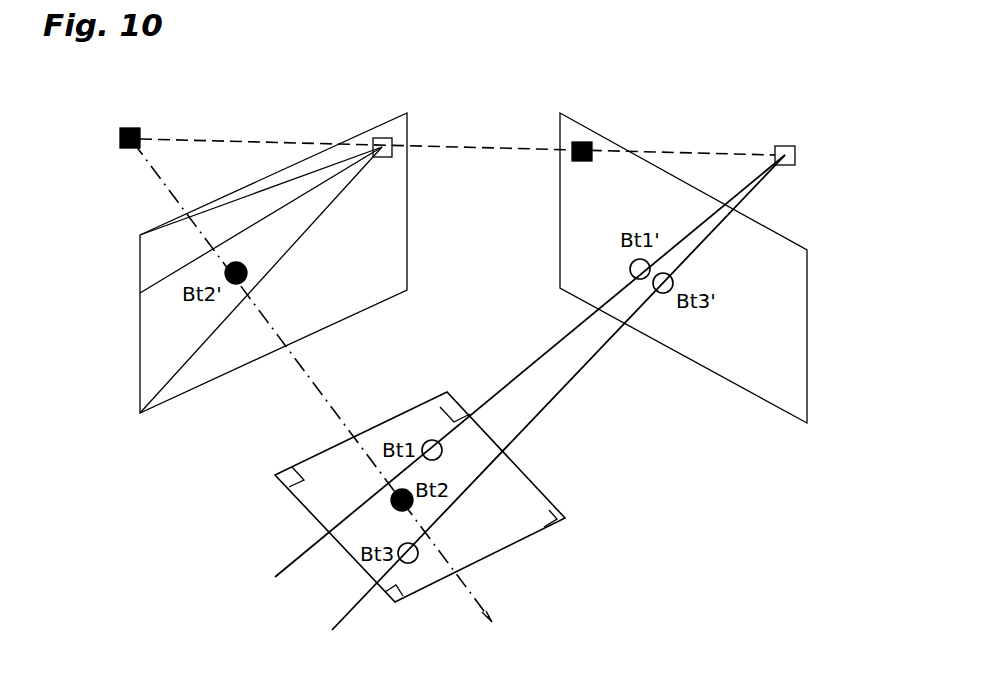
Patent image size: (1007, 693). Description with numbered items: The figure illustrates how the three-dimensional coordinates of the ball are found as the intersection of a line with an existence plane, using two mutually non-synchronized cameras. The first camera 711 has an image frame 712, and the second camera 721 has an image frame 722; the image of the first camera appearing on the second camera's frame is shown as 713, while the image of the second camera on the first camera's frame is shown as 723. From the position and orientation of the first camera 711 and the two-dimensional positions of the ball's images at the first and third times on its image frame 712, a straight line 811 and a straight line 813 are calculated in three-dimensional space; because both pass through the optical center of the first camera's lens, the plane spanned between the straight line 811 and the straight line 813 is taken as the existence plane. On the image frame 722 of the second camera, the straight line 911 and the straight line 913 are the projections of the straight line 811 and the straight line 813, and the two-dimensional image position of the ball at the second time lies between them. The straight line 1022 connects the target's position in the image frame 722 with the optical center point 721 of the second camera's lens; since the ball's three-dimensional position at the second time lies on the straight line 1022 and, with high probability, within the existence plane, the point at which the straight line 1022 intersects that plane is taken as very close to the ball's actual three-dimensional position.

The second camera 721 is at (132, 128).
The image of the first camera 713 is at (392, 138).
The image of the second camera 723 is at (583, 142).
The first camera 711 is at (777, 146).
The image frame of the first camera 712 is at (772, 231).
The image frame of the second camera 722 is at (167, 225).
The straight line 911 is at (141, 270).
The straight line 1022 is at (302, 368).
The straight line 811 is at (485, 390).
The straight line 913 is at (214, 347).
The straight line 813 is at (562, 393).